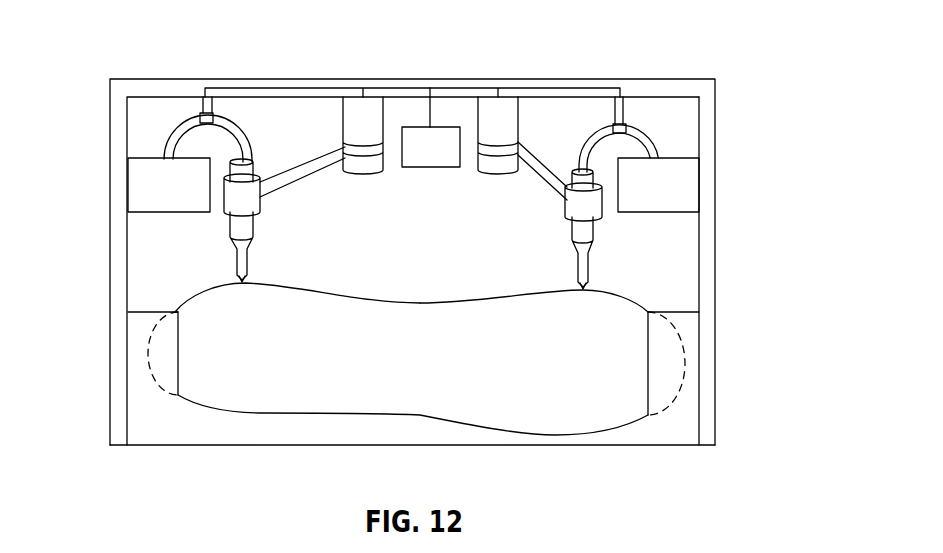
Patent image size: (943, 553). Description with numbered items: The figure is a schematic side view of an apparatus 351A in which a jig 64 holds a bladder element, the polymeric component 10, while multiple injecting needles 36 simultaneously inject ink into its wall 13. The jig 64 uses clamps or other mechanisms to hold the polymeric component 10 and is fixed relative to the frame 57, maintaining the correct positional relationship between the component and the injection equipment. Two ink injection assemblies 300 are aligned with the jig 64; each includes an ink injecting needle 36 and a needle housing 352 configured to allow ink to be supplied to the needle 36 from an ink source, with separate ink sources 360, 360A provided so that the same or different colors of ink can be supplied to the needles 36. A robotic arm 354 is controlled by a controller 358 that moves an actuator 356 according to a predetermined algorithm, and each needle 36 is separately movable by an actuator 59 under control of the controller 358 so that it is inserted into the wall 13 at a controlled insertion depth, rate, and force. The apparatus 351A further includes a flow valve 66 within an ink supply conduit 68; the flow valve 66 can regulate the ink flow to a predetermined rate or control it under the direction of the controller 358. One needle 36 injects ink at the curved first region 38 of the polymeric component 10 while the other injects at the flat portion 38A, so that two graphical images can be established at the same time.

The polymeric component 10 is at (632, 306).
The wall 13 is at (226, 288).
The needle 36 is at (251, 280).
The first region 38 is at (262, 290).
The flat portion 38A is at (577, 289).
The frame 57 is at (696, 79).
The actuator 59 is at (247, 176).
The jig 64 is at (666, 446).
The flow valve 66 is at (203, 115).
The ink supply conduit 68 is at (216, 115).
The ink injection assembly 300 is at (148, 250).
The apparatus 351A is at (742, 195).
The needle housing 352 is at (245, 222).
The robotic arm 354 is at (308, 178).
The actuator 356 is at (345, 107).
The controller 358 is at (417, 132).
The ink source 360 is at (150, 158).
The ink source 360A is at (698, 160).